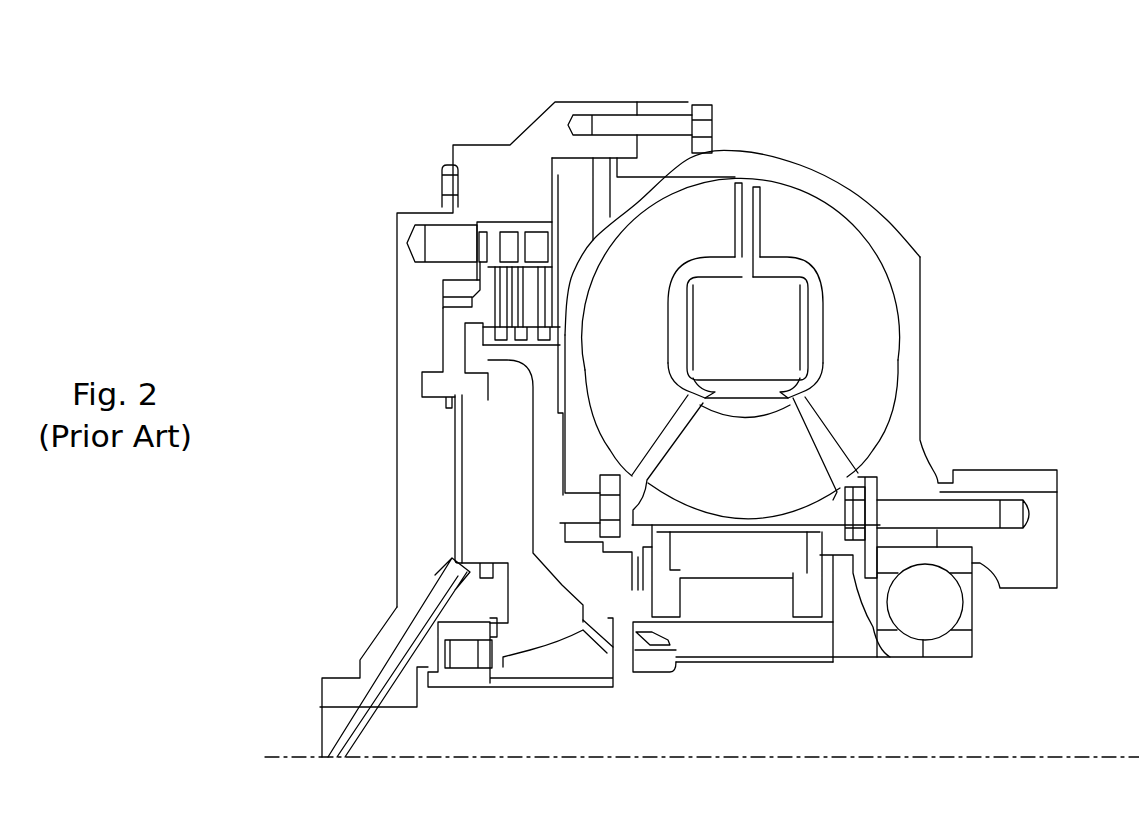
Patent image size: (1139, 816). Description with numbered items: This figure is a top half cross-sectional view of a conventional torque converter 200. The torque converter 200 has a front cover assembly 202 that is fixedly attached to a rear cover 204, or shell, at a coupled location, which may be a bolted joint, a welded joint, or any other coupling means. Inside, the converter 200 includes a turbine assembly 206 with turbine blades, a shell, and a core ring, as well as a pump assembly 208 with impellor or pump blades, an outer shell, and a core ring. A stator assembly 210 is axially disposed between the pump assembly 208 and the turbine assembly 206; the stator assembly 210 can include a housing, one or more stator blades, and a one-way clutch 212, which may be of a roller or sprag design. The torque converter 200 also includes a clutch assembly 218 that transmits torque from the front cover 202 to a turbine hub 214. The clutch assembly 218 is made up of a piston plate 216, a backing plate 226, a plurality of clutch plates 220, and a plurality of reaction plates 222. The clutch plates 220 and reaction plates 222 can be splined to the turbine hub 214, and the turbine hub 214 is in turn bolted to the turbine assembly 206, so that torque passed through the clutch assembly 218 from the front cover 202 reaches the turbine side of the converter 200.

The torque converter 200 is at (997, 138).
The front cover assembly 202 is at (488, 167).
The rear cover 204 is at (847, 203).
The turbine assembly 206 is at (703, 213).
The pump assembly 208 is at (867, 328).
The stator assembly 210 is at (778, 462).
The one-way clutch 212 is at (742, 635).
The turbine hub 214 is at (547, 469).
The piston plate 216 is at (473, 445).
The clutch assembly 218 is at (489, 215).
The clutch plates 220 is at (490, 332).
The reaction plates 222 is at (483, 292).
The backing plate 226 is at (572, 173).